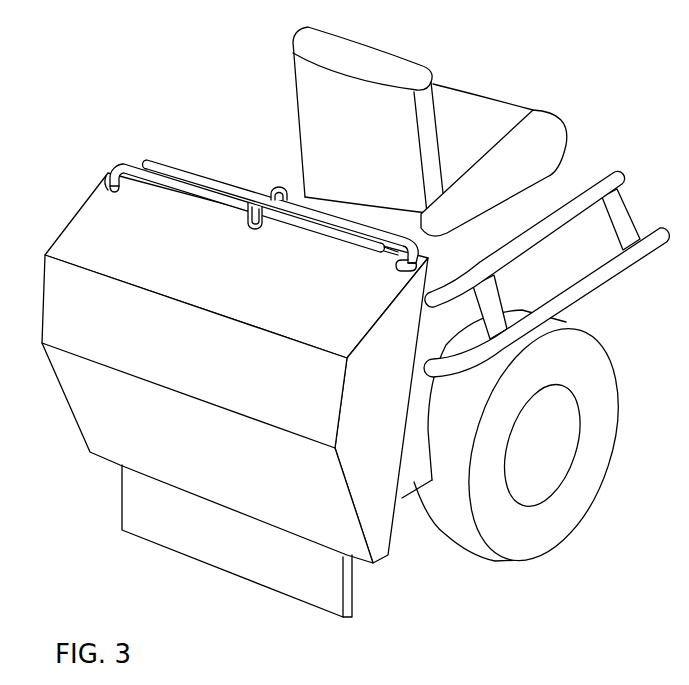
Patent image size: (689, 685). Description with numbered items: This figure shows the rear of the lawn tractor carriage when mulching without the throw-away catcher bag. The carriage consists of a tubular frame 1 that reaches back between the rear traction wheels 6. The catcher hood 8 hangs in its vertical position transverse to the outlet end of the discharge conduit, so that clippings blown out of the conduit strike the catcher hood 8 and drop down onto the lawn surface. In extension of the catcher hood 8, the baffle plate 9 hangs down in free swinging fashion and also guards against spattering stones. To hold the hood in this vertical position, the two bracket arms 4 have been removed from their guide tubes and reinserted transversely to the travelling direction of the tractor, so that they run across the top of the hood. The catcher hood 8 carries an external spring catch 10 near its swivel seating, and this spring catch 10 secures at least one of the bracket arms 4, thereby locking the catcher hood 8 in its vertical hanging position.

The tubular frame 1 is at (586, 288).
The bracket arms 4 is at (164, 180).
The rear traction wheels 6 is at (594, 461).
The catcher hood 8 is at (93, 211).
The baffle plate 9 is at (223, 563).
The spring catch 10 is at (277, 192).